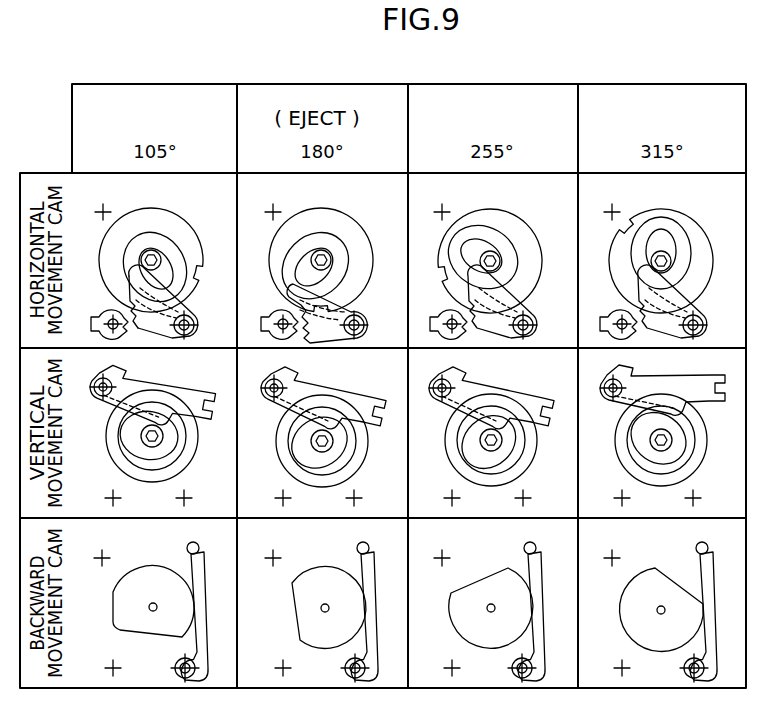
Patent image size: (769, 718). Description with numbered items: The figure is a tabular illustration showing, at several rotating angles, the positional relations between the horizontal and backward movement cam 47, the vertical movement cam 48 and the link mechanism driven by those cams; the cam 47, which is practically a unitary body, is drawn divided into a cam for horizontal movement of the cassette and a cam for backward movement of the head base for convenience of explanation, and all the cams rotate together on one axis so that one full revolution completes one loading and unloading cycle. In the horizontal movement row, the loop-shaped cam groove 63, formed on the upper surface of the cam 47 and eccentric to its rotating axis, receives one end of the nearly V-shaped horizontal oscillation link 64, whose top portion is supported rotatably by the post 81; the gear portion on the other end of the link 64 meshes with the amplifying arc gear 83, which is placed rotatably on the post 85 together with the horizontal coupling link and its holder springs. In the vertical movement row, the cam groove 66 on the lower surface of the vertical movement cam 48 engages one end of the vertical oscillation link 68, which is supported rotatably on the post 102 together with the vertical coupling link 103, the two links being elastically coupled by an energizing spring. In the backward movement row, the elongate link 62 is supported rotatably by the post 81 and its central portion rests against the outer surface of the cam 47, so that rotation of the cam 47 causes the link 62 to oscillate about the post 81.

The post 102 is at (107, 212).
The cam groove 63 is at (160, 243).
The horizontal oscillation link 64 is at (185, 334).
The amplifying arc gear 83 is at (145, 330).
The post 85 is at (108, 318).
The post 81 is at (183, 322).
The vertical coupling link 103 is at (190, 392).
The vertical oscillation link 68 is at (118, 394).
The cam groove 66 is at (133, 436).
The vertical movement cam 48 is at (129, 480).
The horizontal and backward movement cam 47 is at (113, 591).
The link for backward movement of the head base 62 is at (206, 560).